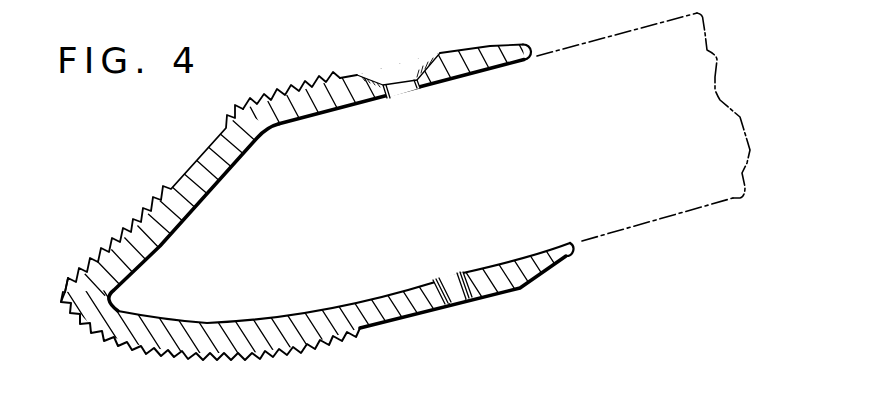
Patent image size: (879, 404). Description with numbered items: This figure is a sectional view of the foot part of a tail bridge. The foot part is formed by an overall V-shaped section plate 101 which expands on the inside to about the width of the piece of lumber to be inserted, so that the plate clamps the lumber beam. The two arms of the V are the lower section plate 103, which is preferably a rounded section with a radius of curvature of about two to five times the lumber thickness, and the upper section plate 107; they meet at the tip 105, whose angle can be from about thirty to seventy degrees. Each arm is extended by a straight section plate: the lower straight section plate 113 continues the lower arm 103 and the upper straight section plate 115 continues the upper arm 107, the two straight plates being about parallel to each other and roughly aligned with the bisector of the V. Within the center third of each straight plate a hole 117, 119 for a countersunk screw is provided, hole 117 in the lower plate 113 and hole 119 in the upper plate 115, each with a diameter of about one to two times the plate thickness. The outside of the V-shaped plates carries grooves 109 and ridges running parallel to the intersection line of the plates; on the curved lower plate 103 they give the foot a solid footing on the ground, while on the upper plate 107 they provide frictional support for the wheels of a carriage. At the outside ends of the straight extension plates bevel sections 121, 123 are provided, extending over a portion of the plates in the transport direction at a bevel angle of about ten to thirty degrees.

The V-shaped section plate 101 is at (108, 207).
The lower section plate 103 is at (209, 332).
The tip 105 is at (70, 308).
The upper section plate 107 is at (177, 207).
The grooves 109 is at (229, 120).
The lower straight section plate 113 is at (405, 307).
The upper straight section plate 115 is at (458, 63).
The hole 117 is at (463, 295).
The hole 119 is at (384, 77).
The bevel section 121 is at (553, 268).
The bevel section 123 is at (483, 50).